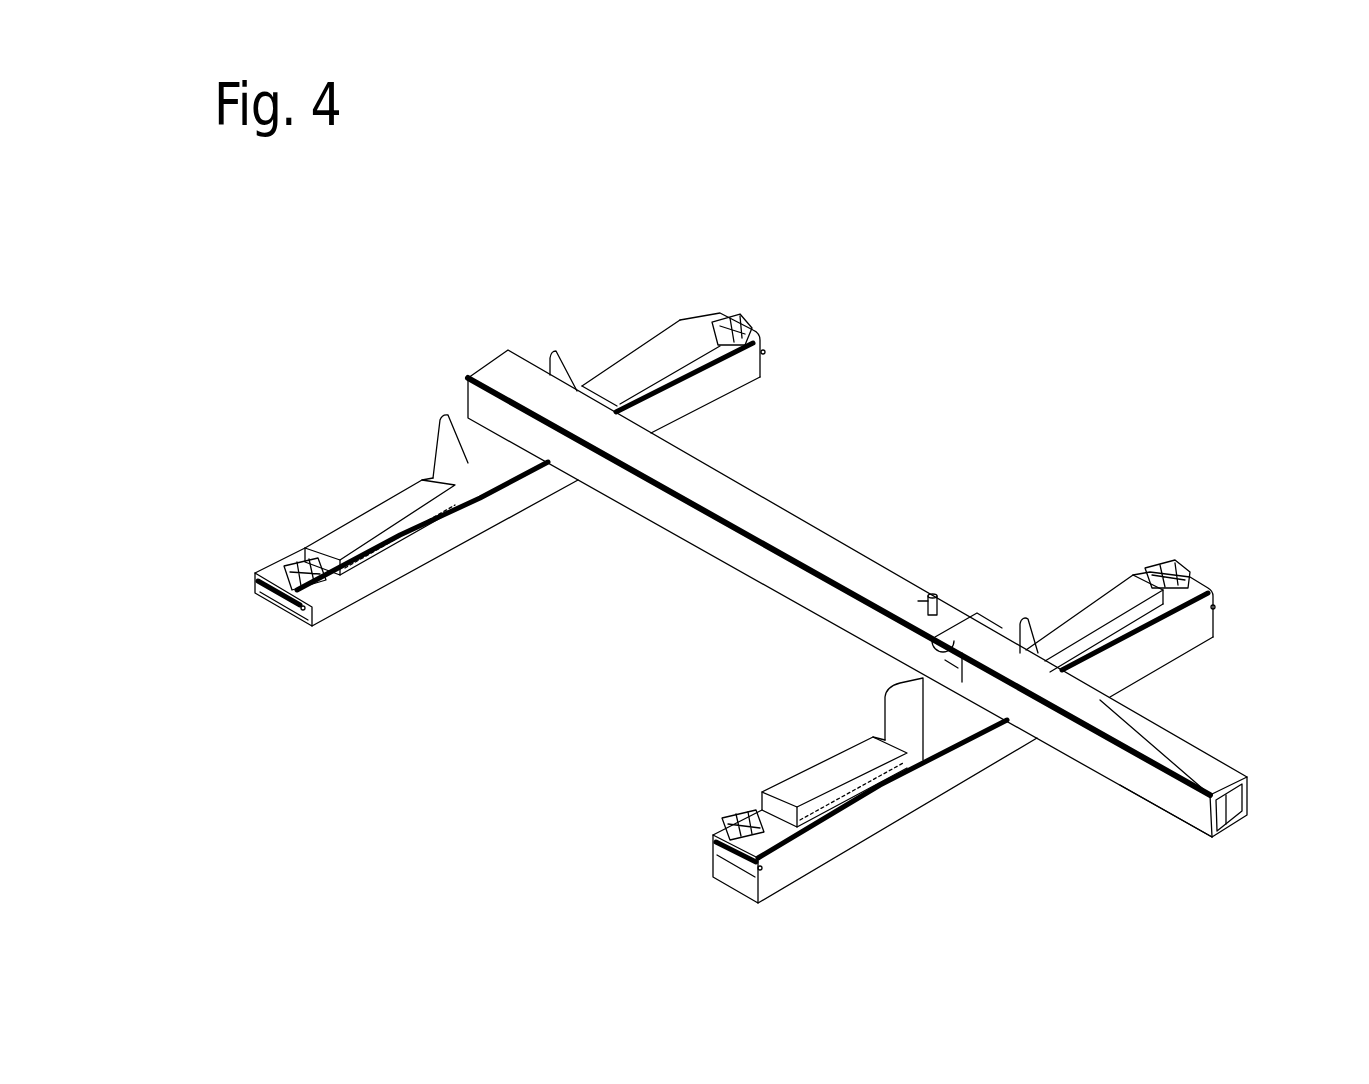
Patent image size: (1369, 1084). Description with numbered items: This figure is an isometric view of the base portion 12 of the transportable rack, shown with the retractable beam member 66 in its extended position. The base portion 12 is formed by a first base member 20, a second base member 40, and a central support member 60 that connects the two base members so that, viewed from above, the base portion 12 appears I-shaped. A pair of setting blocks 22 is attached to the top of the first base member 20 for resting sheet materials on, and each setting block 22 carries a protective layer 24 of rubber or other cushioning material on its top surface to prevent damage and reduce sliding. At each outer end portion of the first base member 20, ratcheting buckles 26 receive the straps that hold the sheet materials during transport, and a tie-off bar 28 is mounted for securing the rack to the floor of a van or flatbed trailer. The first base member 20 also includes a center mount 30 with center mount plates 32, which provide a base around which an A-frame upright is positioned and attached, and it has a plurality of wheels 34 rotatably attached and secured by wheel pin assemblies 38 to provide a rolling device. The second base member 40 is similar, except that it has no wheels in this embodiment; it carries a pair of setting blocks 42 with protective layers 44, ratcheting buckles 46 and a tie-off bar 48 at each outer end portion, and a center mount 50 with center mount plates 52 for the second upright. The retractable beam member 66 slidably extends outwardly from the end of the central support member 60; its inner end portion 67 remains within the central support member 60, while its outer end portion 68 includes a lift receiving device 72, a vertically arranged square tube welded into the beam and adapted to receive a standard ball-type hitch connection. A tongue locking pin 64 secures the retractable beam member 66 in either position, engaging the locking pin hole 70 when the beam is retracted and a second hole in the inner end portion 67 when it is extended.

The base portion 12 is at (1070, 400).
The first base member 20 is at (557, 483).
The setting blocks 22 is at (702, 372).
The protective layer 24 is at (642, 372).
The ratcheting buckles 26 is at (742, 330).
The tie-off bar 28 is at (767, 352).
The center mount 30 is at (500, 467).
The center mount plates 32 is at (554, 350).
The wheels 34 is at (292, 618).
The wheel pin assemblies 38 is at (283, 607).
The second base member 40 is at (955, 772).
The setting blocks 42 is at (1163, 607).
The protective layer 44 is at (1105, 615).
The ratcheting buckles 46 is at (1170, 578).
The tie-off bar 48 is at (1215, 606).
The center mount 50 is at (962, 720).
The center mount plates 52 is at (1020, 622).
The central support member 60 is at (848, 548).
The tongue locking pin 64 is at (934, 594).
The retractable beam member 66 is at (1182, 825).
The inner end portion 67 is at (997, 652).
The outer end portion 68 is at (1213, 778).
The locking pin hole 70 is at (1182, 757).
The lift receiving device 72 is at (1233, 815).